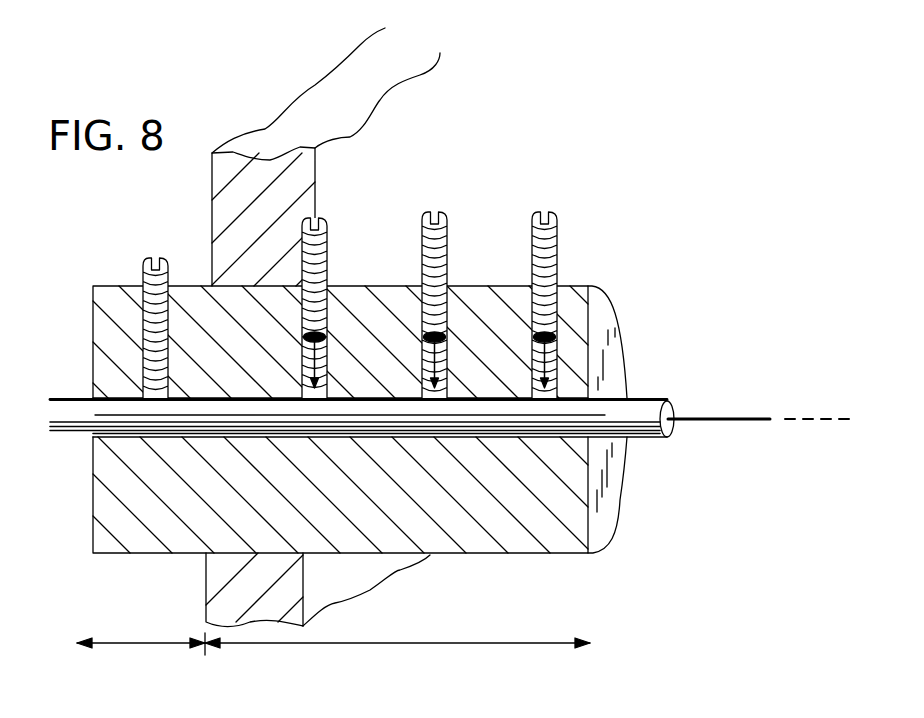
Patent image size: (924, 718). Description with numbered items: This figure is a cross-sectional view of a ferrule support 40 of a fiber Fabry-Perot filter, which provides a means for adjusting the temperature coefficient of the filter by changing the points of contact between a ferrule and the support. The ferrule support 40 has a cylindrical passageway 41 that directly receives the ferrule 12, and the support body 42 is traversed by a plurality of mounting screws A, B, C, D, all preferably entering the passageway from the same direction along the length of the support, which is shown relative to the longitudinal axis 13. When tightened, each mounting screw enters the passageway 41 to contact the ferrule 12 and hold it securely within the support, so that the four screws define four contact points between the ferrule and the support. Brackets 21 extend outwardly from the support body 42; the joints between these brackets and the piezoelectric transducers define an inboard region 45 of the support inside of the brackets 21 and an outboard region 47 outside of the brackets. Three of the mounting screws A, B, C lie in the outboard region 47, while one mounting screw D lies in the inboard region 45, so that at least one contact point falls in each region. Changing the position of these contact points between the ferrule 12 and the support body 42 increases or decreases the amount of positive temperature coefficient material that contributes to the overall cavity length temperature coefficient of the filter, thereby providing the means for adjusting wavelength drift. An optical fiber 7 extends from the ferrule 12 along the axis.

The ferrule support 40 is at (416, 157).
The support body 42 is at (608, 512).
The brackets 21 is at (206, 583).
The ferrule 12 is at (646, 398).
The cylindrical passageway 41 is at (95, 436).
The optical fiber 7 is at (730, 426).
The longitudinal axis 13 is at (793, 426).
The inboard region 45 is at (141, 665).
The outboard region 47 is at (397, 667).
The mounting screw A is at (558, 263).
The mounting screw B is at (448, 263).
The mounting screw C is at (329, 262).
The mounting screw D is at (150, 270).